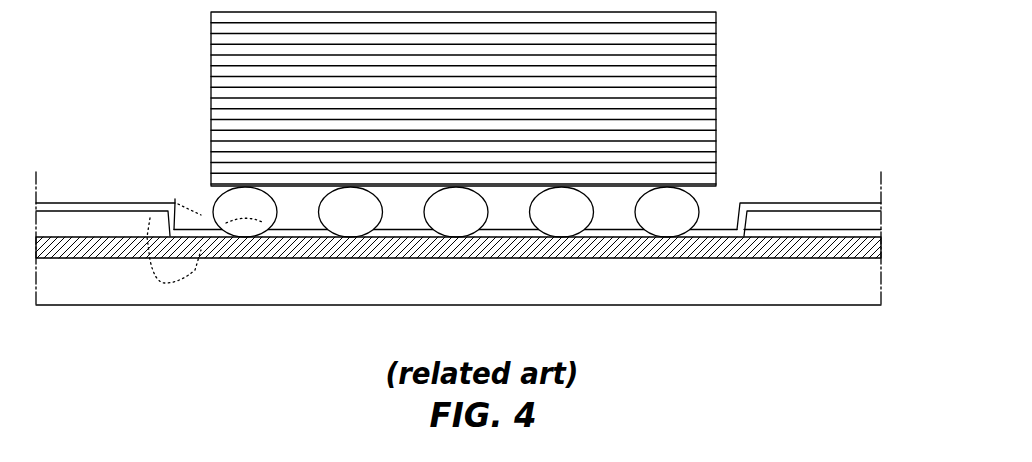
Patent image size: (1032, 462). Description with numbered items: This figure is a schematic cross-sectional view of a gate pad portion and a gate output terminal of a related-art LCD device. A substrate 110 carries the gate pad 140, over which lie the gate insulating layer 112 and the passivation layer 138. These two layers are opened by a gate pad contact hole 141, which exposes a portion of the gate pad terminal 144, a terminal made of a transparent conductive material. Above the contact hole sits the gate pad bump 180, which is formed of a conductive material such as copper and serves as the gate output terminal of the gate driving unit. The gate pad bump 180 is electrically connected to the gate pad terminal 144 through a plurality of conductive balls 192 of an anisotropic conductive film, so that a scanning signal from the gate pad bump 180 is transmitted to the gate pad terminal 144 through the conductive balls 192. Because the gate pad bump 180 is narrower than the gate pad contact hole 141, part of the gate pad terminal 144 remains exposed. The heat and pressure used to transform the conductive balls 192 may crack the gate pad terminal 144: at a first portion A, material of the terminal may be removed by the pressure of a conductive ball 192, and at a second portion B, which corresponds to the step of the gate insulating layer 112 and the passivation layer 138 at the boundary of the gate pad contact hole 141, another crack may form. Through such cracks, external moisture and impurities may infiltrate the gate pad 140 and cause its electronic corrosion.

The substrate 110 is at (439, 291).
The gate insulating layer 112 is at (877, 240).
The passivation layer 138 is at (877, 221).
The gate pad 140 is at (797, 236).
The gate pad contact hole 141 is at (199, 209).
The gate pad terminal 144 is at (830, 202).
The gate pad bump 180 is at (716, 116).
The conductive balls 192 is at (697, 205).
The first portion A is at (243, 248).
The second portion B is at (175, 283).